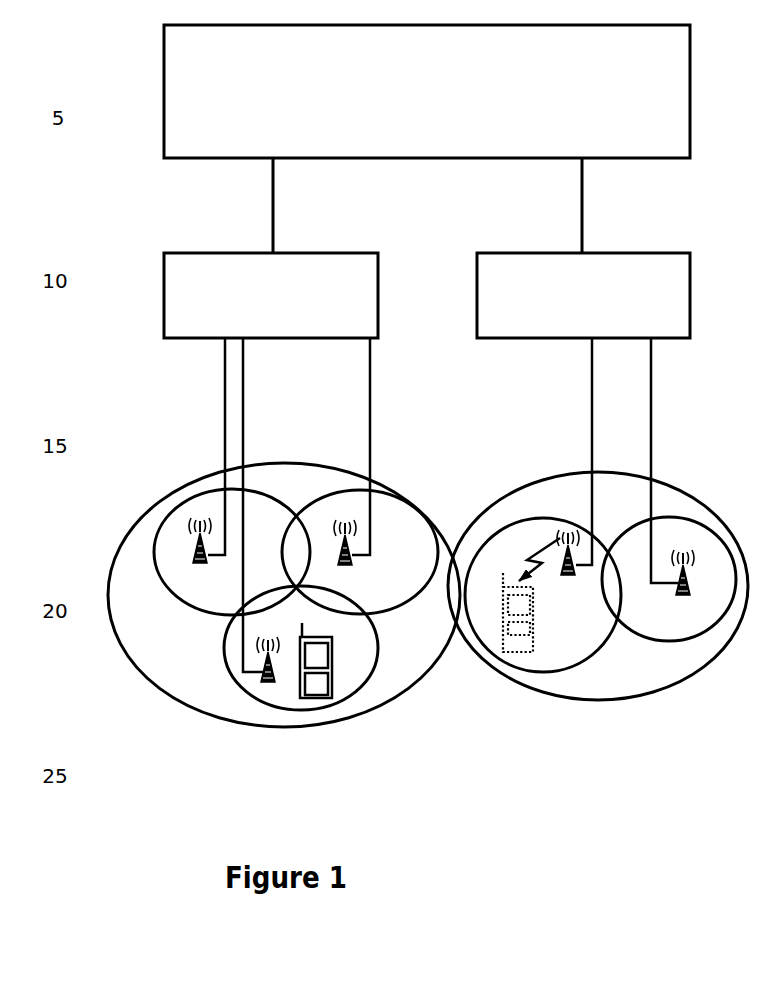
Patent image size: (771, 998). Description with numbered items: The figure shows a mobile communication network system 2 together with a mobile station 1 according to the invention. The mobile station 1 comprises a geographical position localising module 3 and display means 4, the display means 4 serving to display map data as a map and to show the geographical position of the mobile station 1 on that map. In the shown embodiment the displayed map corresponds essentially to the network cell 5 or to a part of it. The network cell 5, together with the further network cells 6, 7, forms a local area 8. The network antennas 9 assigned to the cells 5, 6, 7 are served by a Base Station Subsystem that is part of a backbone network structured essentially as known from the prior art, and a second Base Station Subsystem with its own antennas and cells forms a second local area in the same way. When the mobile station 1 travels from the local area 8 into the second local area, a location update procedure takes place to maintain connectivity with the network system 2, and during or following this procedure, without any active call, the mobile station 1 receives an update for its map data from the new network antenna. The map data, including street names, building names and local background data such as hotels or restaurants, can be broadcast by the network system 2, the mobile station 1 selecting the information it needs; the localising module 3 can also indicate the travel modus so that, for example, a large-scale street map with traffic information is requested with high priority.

The mobile station 1 is at (183, 73).
The mobile communication network system 2 is at (115, 223).
The geographical position localising module 3 is at (322, 693).
The display means 4 is at (313, 660).
The network cell 5 is at (255, 702).
The further network cell 6 is at (178, 598).
The further network cell 7 is at (400, 605).
The local area 8 is at (285, 728).
The network antennas 9 is at (197, 557).